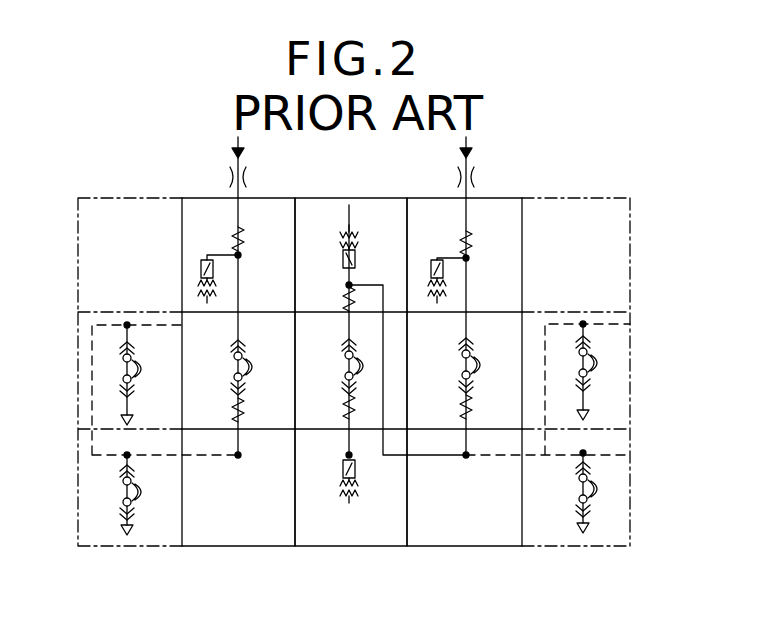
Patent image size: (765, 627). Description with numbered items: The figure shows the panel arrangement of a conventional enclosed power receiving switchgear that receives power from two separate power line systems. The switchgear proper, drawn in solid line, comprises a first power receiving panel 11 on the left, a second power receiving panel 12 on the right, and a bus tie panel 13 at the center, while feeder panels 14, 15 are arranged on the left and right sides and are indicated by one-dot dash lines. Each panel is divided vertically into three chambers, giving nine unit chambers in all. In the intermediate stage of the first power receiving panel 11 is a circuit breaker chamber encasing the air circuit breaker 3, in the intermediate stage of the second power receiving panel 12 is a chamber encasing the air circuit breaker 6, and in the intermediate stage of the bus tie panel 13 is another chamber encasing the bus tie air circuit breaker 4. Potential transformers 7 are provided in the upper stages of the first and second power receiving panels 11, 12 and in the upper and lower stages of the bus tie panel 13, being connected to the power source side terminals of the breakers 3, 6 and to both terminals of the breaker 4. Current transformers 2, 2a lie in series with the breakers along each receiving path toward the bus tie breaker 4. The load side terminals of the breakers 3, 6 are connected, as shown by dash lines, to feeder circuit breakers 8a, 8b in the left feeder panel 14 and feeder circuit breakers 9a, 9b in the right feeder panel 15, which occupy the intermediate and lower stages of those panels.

The current transformer 2 is at (248, 240).
The current transformer 2a is at (344, 296).
The air circuit breaker 3 is at (253, 368).
The bus tie air circuit breaker 4 is at (338, 368).
The air circuit breaker 6 is at (481, 366).
The potential transformer 7 is at (195, 296).
The feeder circuit breaker 8a is at (116, 368).
The feeder circuit breaker 8b is at (116, 496).
The feeder circuit breaker 9a is at (602, 359).
The feeder circuit breaker 9b is at (602, 483).
The first power receiving panel 11 is at (238, 548).
The second power receiving panel 12 is at (466, 548).
The bus tie panel 13 is at (349, 548).
The feeder panel 14 is at (138, 548).
The feeder panel 15 is at (583, 548).